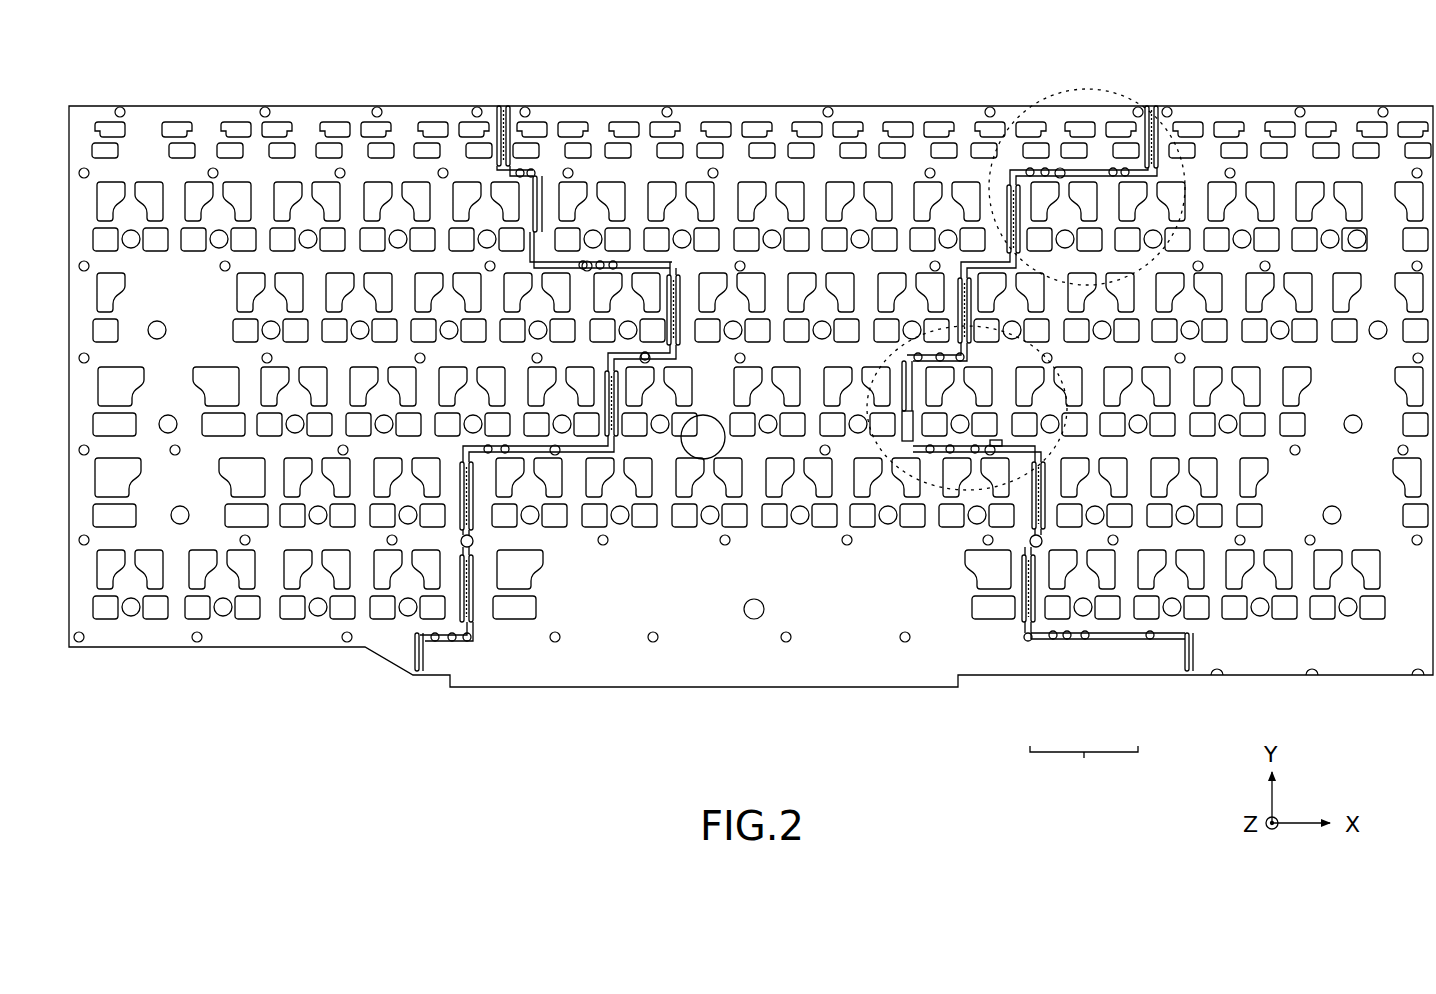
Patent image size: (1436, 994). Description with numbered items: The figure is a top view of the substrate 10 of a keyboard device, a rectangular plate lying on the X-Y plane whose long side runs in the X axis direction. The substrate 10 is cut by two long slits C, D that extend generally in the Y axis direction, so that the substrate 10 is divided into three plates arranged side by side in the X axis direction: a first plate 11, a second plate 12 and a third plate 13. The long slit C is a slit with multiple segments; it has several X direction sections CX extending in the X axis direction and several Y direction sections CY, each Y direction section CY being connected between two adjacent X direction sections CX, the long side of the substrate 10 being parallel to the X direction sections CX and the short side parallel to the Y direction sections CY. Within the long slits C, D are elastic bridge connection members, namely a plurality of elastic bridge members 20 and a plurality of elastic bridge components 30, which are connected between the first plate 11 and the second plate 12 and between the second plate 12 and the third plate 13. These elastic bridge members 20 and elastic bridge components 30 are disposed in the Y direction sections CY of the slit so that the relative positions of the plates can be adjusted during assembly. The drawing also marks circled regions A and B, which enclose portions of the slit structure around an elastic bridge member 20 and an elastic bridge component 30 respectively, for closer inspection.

The substrate 10 is at (150, 104).
The first plate 11 is at (1260, 104).
The second plate 12 is at (757, 104).
The third plate 13 is at (327, 104).
The elastic bridge member 20 is at (540, 178).
The elastic bridge component 30 is at (670, 272).
The detail region A is at (940, 492).
The detail region B is at (1062, 90).
The long slit C is at (1084, 767).
The X direction section CX is at (1112, 640).
The Y direction section CY is at (1045, 640).
The long slit D is at (507, 104).